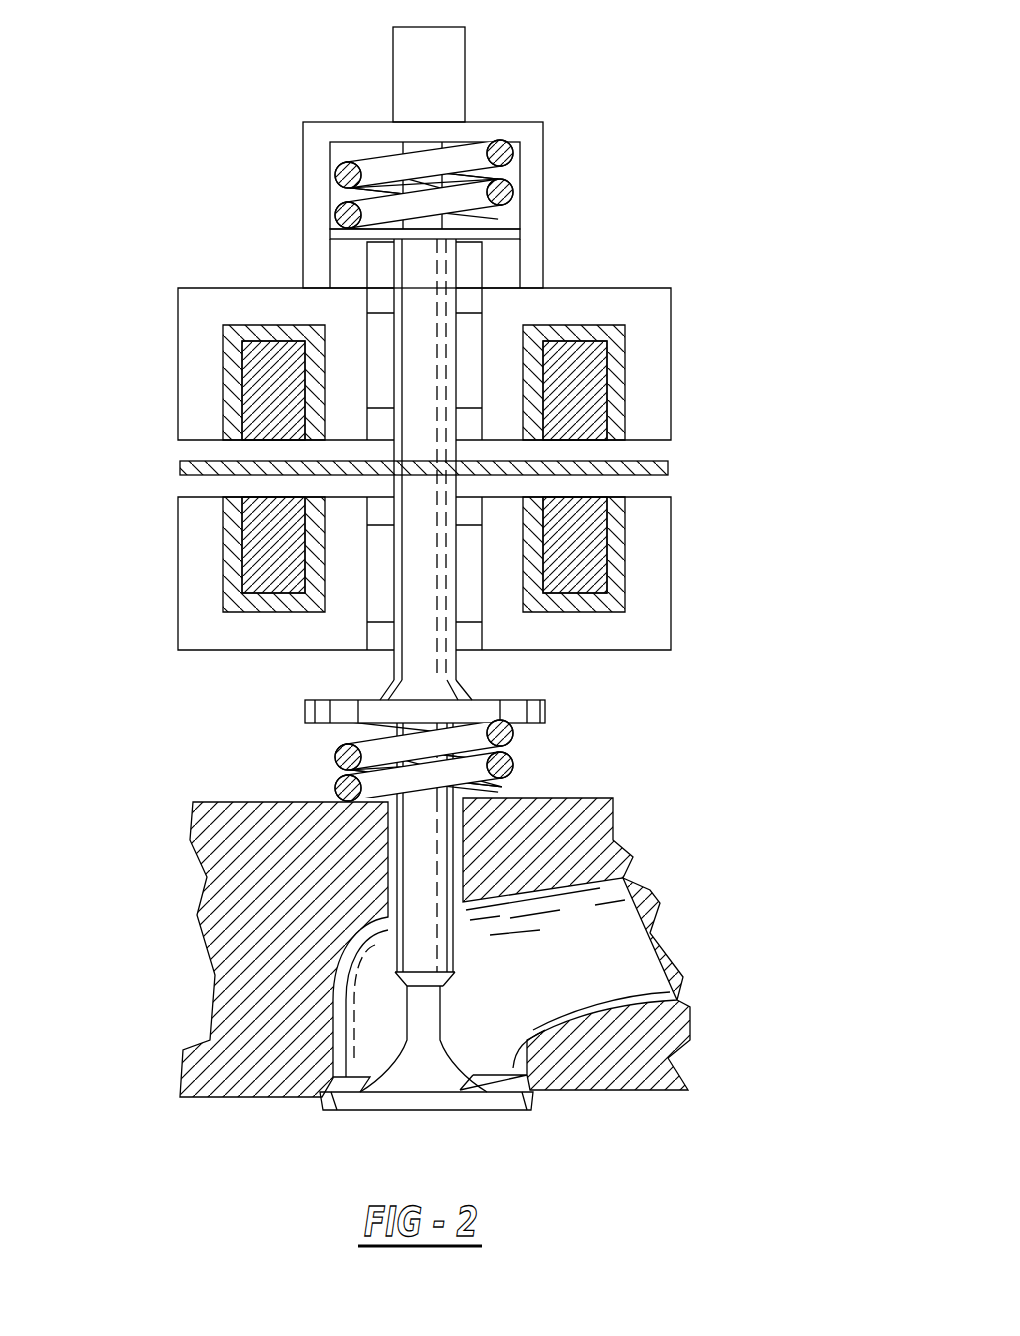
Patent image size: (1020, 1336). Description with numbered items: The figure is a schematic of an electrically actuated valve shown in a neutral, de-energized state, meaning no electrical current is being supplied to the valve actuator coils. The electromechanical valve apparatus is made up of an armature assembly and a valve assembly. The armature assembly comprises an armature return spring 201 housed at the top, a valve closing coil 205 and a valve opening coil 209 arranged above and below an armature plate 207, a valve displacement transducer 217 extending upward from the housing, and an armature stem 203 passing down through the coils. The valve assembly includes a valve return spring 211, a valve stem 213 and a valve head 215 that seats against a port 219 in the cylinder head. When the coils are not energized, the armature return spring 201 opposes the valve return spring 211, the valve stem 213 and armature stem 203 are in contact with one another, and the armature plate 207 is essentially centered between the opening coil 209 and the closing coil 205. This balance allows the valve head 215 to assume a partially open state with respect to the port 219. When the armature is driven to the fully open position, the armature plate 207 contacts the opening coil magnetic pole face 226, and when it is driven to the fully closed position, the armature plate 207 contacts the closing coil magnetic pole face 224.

The armature return spring 201 is at (510, 187).
The armature stem 203 is at (392, 258).
The valve closing coil 205 is at (627, 366).
The armature plate 207 is at (668, 462).
The valve opening coil 209 is at (627, 552).
The valve return spring 211 is at (512, 763).
The valve stem 213 is at (417, 853).
The valve head 215 is at (498, 1112).
The valve displacement transducer 217 is at (465, 75).
The port 219 is at (500, 1038).
The closing coil magnetic pole face 224 is at (276, 462).
The opening coil magnetic pole face 226 is at (272, 497).